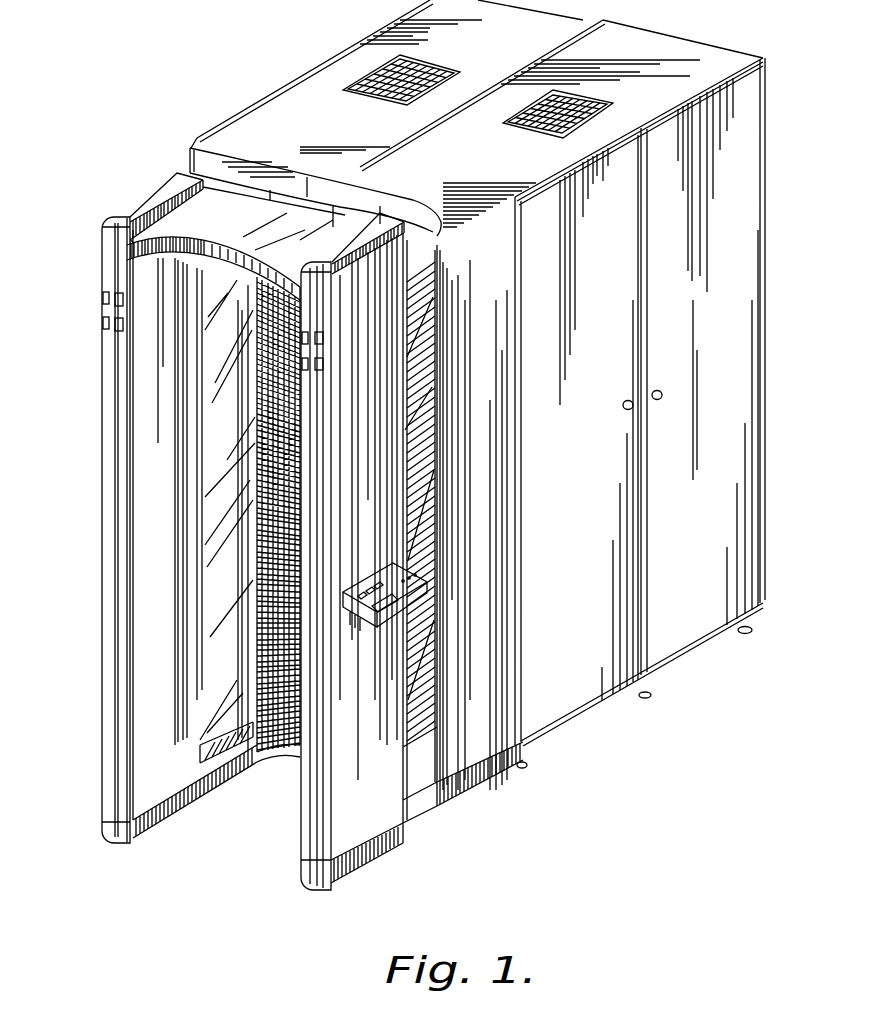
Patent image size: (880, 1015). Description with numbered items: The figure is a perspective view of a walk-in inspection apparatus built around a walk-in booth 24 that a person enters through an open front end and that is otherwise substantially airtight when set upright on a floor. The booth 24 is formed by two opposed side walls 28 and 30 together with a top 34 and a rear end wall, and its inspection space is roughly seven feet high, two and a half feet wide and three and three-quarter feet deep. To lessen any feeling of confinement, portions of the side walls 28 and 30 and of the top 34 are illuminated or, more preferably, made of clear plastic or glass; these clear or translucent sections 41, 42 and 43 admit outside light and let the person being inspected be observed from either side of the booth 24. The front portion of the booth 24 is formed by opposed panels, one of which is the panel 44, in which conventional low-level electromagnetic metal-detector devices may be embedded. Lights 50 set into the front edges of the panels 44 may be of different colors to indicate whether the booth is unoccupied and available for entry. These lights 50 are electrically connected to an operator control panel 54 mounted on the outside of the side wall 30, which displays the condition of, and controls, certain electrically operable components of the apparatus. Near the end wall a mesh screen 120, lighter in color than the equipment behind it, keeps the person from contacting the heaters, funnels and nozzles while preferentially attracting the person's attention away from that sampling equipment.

The walk-in booth 24 is at (166, 158).
The side wall 28 is at (102, 535).
The side wall 30 is at (360, 828).
The top 34 is at (200, 222).
The clear or translucent section 41 is at (212, 747).
The clear or translucent section 42 is at (415, 757).
The clear or translucent section 43 is at (287, 183).
The panel 44 is at (160, 575).
The lights 50 is at (103, 295).
The operator control panel 54 is at (420, 593).
The mesh screen 120 is at (265, 456).